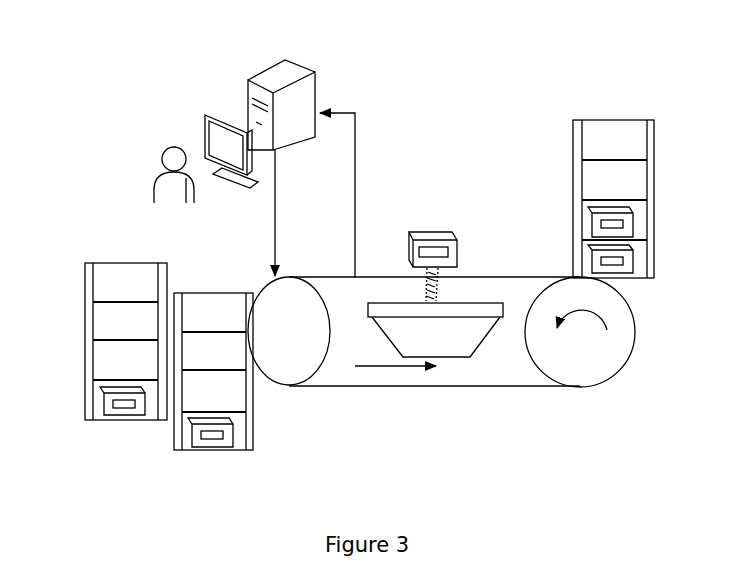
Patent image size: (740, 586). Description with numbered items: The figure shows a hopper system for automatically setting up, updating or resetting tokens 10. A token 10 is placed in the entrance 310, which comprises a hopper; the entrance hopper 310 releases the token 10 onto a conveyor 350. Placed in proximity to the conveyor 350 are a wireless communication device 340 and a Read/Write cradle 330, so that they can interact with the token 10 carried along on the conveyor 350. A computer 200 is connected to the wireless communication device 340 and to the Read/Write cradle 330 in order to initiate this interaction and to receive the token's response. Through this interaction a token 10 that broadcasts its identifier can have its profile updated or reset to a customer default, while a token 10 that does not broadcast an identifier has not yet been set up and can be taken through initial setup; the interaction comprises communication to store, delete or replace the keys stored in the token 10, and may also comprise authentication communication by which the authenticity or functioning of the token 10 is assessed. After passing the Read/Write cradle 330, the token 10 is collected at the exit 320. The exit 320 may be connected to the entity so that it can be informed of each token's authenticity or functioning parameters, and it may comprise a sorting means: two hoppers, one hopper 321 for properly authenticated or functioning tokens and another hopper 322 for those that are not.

The computer 200 is at (230, 84).
The token 10 is at (637, 211).
The entrance 310 is at (613, 183).
The exit 320 is at (202, 392).
The hopper for properly authenticated or functioning tokens 321 is at (116, 434).
The hopper for tokens that are not properly authenticated or functioning 322 is at (232, 458).
The Read/Write cradle 330 is at (451, 343).
The wireless communication device 340 is at (442, 290).
The conveyor 350 is at (404, 390).